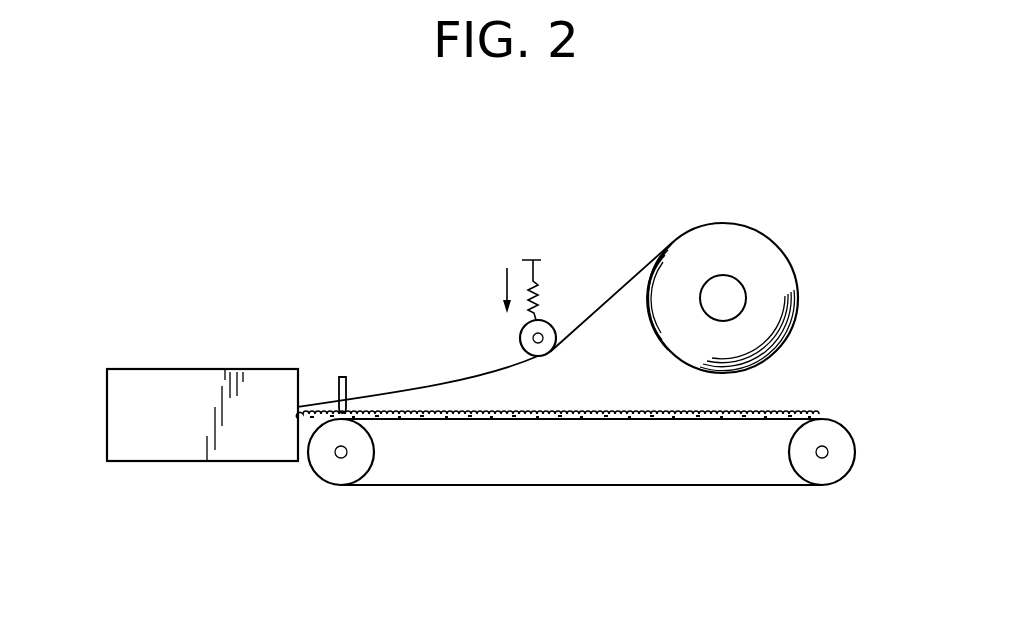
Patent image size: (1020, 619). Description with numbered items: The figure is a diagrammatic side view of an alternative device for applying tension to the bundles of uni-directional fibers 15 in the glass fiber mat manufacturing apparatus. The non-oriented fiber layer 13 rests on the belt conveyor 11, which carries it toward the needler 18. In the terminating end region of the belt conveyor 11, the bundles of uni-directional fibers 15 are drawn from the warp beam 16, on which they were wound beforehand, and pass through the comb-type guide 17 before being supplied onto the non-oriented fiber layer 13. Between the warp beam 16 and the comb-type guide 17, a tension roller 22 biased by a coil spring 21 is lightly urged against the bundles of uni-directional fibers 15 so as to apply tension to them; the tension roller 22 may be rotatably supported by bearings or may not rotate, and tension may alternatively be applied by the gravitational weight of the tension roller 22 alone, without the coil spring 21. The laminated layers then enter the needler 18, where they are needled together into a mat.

The belt conveyor 11 is at (452, 486).
The non-oriented fiber layer 13 is at (798, 414).
The bundles of uni-directional fibers 15 is at (622, 288).
The warp beam 16 is at (770, 250).
The comb-type guide 17 is at (342, 377).
The needler 18 is at (168, 369).
The coil spring 21 is at (540, 282).
The tension roller 22 is at (520, 338).